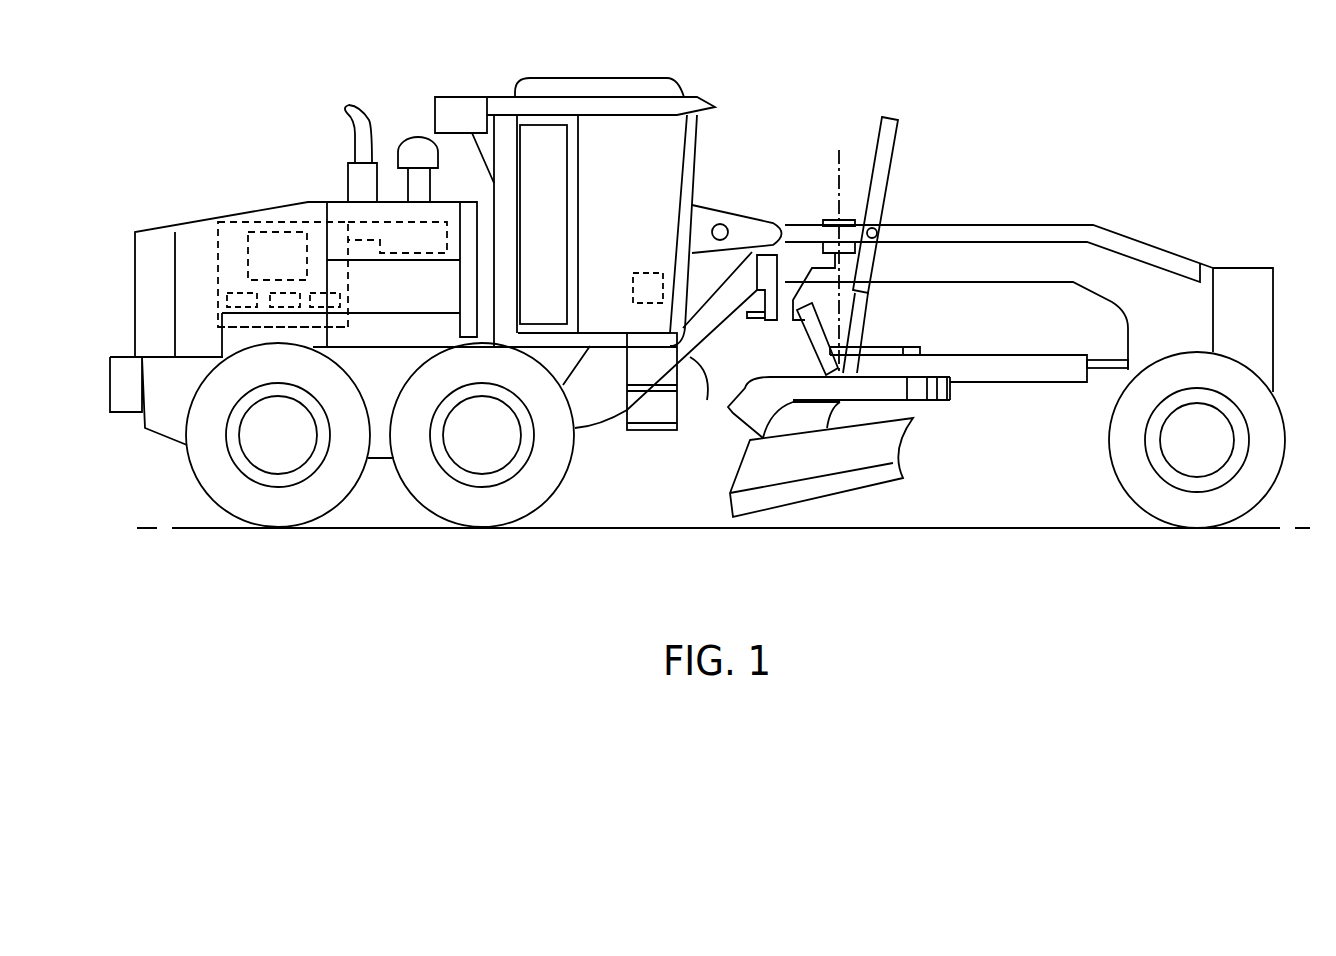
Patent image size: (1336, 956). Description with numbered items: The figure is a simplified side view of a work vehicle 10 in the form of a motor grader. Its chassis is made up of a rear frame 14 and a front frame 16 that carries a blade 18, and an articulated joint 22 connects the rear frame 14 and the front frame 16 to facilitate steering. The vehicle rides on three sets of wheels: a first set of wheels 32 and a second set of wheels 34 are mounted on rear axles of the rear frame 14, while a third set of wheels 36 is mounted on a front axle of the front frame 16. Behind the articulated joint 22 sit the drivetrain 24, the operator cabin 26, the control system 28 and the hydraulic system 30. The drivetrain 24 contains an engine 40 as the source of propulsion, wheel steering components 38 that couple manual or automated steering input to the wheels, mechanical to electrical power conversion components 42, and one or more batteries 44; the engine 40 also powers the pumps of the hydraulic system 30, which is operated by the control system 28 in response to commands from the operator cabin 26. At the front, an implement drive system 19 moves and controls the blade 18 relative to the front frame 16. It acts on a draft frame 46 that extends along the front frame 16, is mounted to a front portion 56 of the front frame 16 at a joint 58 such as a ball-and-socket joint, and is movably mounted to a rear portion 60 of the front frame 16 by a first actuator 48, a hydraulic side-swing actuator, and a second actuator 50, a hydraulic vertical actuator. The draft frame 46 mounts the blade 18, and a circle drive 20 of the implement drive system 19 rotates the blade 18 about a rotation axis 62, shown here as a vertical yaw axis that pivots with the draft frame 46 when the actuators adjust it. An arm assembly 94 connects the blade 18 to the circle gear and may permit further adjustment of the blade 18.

The work vehicle 10 is at (973, 126).
The rear frame 14 is at (200, 238).
The front frame 16 is at (1147, 252).
The blade 18 is at (730, 483).
The implement drive system 19 is at (657, 480).
The circle drive 20 is at (880, 343).
The articulated joint 22 is at (601, 432).
The drivetrain 24 is at (293, 222).
The operator cabin 26 is at (667, 108).
The control system 28 is at (630, 290).
The hydraulic system 30 is at (397, 220).
The first set of wheels 32 is at (287, 450).
The second set of wheels 34 is at (490, 452).
The third set of wheels 36 is at (1185, 453).
The wheel steering components 38 is at (225, 296).
The engine 40 is at (270, 232).
The mechanical to electrical power conversion components 42 is at (330, 303).
The batteries 44 is at (277, 308).
The draft frame 46 is at (1003, 363).
The first actuator 48 is at (813, 350).
The second actuator 50 is at (882, 140).
The front portion 56 is at (1250, 305).
The joint 58 is at (1126, 372).
The rear portion 60 is at (745, 386).
The rotation axis 62 is at (839, 178).
The arm assembly 94 is at (742, 435).